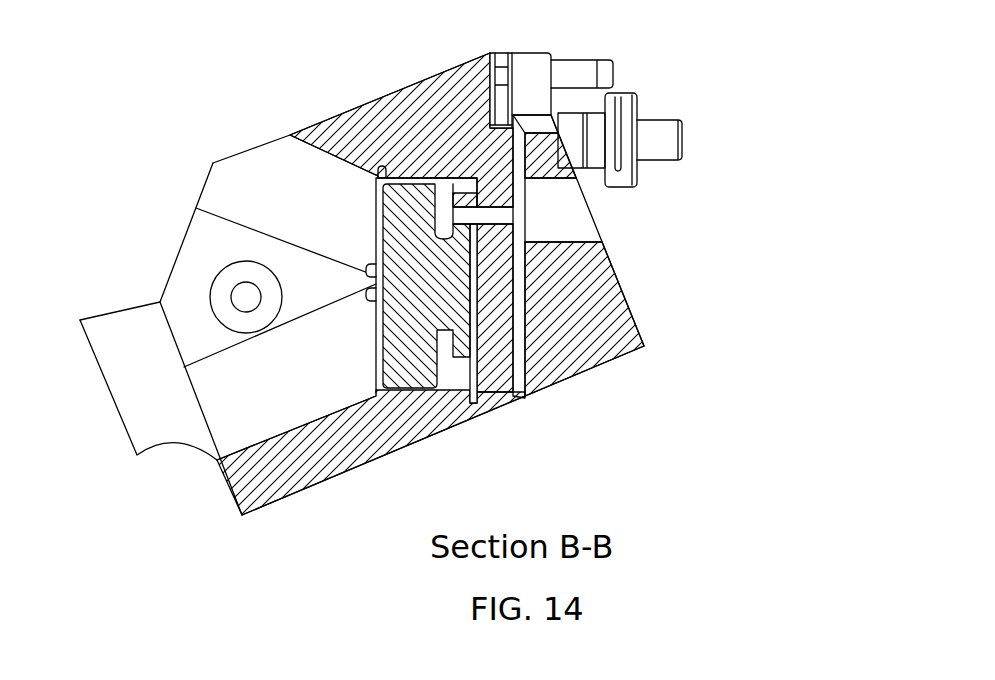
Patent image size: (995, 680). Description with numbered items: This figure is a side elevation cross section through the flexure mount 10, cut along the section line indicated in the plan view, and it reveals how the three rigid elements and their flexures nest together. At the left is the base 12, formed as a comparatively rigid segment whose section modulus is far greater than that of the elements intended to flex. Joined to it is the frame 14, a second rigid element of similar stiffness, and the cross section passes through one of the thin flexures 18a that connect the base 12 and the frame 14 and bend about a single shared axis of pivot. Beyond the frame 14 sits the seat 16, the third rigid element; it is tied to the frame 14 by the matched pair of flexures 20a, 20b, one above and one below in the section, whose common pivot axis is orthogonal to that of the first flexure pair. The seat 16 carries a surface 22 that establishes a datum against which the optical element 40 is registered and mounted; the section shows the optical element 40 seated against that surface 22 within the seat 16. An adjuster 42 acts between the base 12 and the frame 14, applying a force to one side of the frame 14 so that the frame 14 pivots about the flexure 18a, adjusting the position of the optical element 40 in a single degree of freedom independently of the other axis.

The tool assembly 10 is at (141, 253).
The base 12 is at (156, 385).
The frame 14 is at (332, 128).
The seat 16 is at (457, 80).
The flexure 18a is at (372, 286).
The flexure 20a is at (385, 108).
The flexure 20b is at (363, 445).
The surface 22 is at (467, 404).
The optical element 40 is at (380, 227).
The adjuster 42 is at (670, 118).